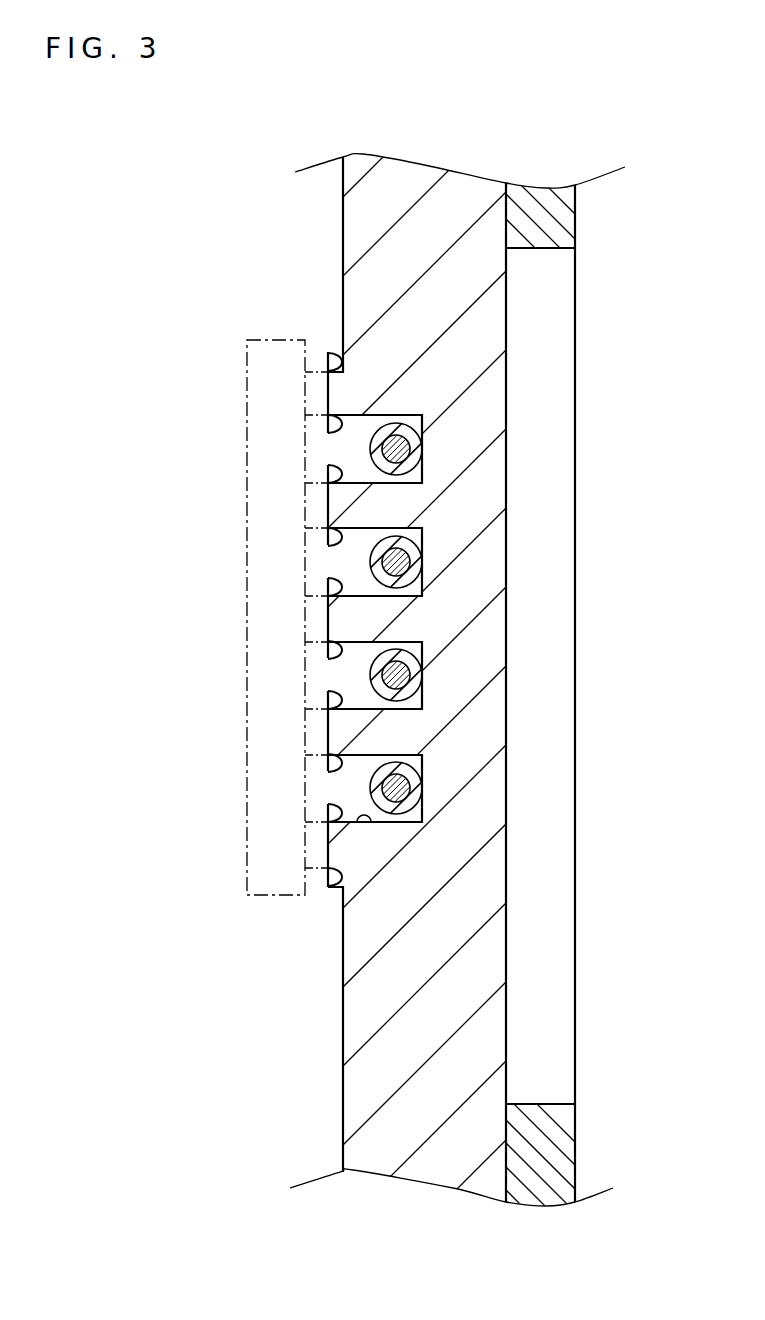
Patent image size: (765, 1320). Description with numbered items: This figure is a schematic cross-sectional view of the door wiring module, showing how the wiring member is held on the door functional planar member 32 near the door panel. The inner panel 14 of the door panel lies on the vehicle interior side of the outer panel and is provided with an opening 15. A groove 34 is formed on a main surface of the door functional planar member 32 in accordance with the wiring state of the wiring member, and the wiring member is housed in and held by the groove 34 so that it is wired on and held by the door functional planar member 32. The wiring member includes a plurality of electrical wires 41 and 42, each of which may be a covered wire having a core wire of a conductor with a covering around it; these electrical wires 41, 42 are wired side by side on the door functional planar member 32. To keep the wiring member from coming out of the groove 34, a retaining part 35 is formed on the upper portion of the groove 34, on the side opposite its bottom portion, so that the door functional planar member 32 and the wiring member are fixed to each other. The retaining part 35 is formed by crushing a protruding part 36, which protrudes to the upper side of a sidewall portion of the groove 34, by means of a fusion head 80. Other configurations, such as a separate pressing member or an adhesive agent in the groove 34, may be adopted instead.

The door functional planar member 32 is at (355, 243).
The fusion head 80 is at (247, 481).
The protruding part 36 is at (313, 593).
The retaining part 35 is at (327, 810).
The groove 34 is at (357, 818).
The electrical wire 41 is at (421, 640).
The electrical wire 42 is at (408, 766).
The opening 15 is at (537, 1104).
The inner panel 14 is at (573, 1157).